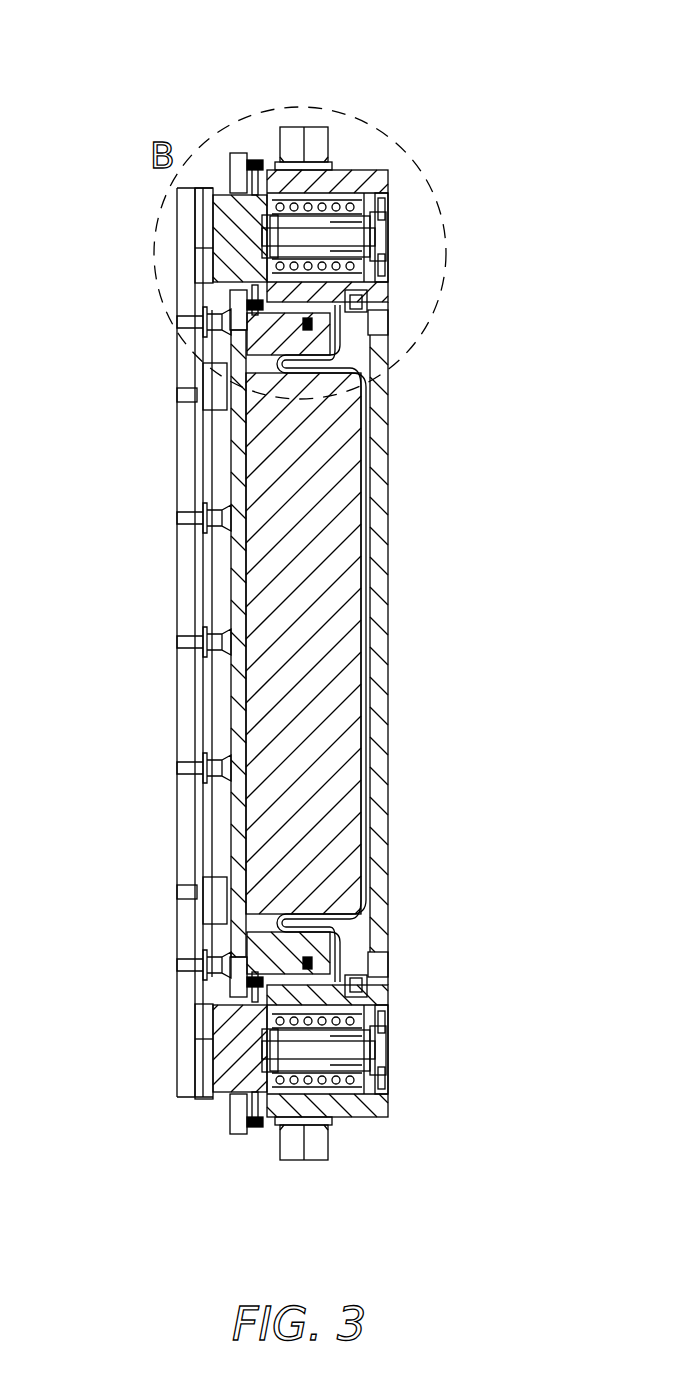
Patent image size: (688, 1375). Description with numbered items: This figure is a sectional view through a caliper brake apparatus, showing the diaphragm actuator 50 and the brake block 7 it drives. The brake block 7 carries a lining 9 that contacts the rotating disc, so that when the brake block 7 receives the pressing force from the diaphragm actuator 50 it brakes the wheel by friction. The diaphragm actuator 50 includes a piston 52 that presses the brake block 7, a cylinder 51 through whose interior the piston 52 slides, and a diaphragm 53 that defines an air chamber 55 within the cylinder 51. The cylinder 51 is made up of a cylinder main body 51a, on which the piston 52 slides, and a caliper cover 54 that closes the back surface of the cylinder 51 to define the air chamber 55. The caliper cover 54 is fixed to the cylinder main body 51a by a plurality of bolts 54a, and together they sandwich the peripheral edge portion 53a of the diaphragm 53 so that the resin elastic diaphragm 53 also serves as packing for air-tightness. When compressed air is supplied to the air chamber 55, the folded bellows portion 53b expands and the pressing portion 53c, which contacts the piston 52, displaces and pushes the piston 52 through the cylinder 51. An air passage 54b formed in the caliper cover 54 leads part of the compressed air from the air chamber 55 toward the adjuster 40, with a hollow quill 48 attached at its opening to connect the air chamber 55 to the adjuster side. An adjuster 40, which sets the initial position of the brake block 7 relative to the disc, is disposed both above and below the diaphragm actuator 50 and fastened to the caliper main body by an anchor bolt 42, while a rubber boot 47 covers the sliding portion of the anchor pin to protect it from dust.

The brake block 7 is at (177, 688).
The lining 9 is at (193, 628).
The adjuster 40 is at (349, 150).
The anchor bolt 42 is at (292, 122).
The rubber boot 47 is at (260, 162).
The quill 48 is at (367, 297).
The diaphragm actuator 50 is at (292, 641).
The cylinder 51 is at (243, 308).
The cylinder main body 51a is at (240, 324).
The piston 52 is at (270, 470).
The diaphragm 53 is at (292, 643).
The peripheral edge portion 53a is at (240, 955).
The bellows portion 53b is at (247, 913).
The pressing portion 53c is at (366, 832).
The caliper cover 54 is at (397, 643).
The bolt 54a is at (388, 322).
The air passage 54b is at (355, 348).
The air chamber 55 is at (370, 544).